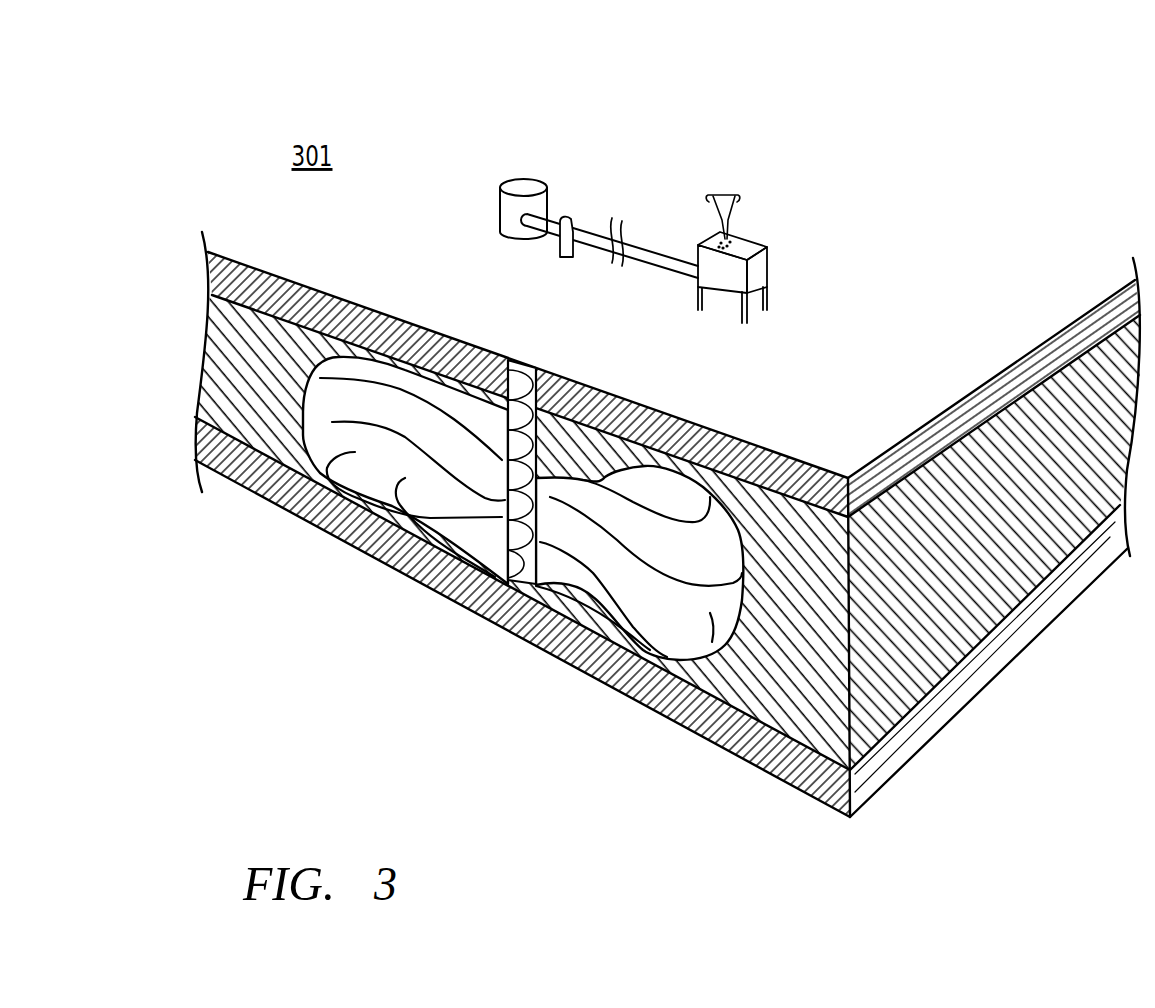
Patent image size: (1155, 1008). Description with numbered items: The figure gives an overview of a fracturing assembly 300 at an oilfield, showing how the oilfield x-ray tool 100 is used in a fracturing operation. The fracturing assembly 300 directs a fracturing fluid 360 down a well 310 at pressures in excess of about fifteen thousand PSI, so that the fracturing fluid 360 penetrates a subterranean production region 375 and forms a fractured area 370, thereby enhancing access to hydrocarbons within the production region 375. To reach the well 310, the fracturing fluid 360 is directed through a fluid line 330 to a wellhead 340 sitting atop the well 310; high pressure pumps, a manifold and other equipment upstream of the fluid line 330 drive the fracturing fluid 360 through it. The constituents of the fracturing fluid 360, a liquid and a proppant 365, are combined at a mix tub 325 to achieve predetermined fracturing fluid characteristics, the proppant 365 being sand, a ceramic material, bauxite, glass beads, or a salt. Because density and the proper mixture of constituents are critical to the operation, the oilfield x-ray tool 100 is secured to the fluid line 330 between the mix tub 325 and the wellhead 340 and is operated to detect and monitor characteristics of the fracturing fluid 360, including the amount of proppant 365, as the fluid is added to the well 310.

The fracturing assembly 300 is at (860, 66).
The well 310 is at (540, 450).
The mix tub 325 is at (805, 265).
The fluid line 330 is at (587, 233).
The wellhead 340 is at (513, 185).
The fracturing fluid 360 is at (600, 482).
The proppant 365 is at (729, 236).
The fractured area 370 is at (321, 436).
The subterranean production region 375 is at (667, 524).
The oilfield x-ray tool 100 is at (554, 262).